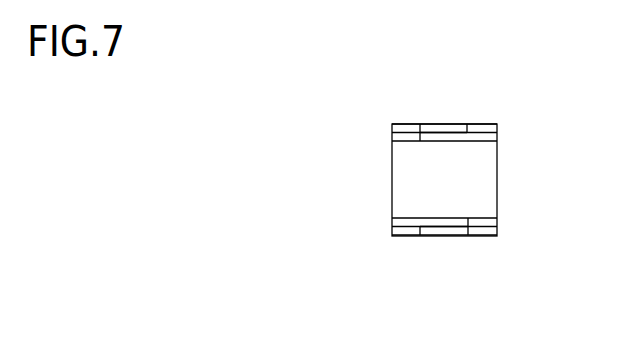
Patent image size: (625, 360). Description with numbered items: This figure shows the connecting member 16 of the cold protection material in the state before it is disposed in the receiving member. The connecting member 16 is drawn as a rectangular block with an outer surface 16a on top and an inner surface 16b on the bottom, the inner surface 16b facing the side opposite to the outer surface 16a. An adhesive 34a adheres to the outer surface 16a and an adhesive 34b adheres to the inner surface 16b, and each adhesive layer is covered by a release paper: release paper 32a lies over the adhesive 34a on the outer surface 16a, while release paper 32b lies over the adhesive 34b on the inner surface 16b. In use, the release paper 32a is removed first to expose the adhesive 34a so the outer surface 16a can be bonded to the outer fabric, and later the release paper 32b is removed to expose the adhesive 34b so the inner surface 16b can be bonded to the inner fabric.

The connecting member 16 is at (497, 174).
The outer surface 16a is at (420, 124).
The inner surface 16b is at (470, 236).
The release paper 32a is at (447, 124).
The release paper 32b is at (440, 236).
The adhesive 34a is at (467, 124).
The adhesive 34b is at (420, 236).